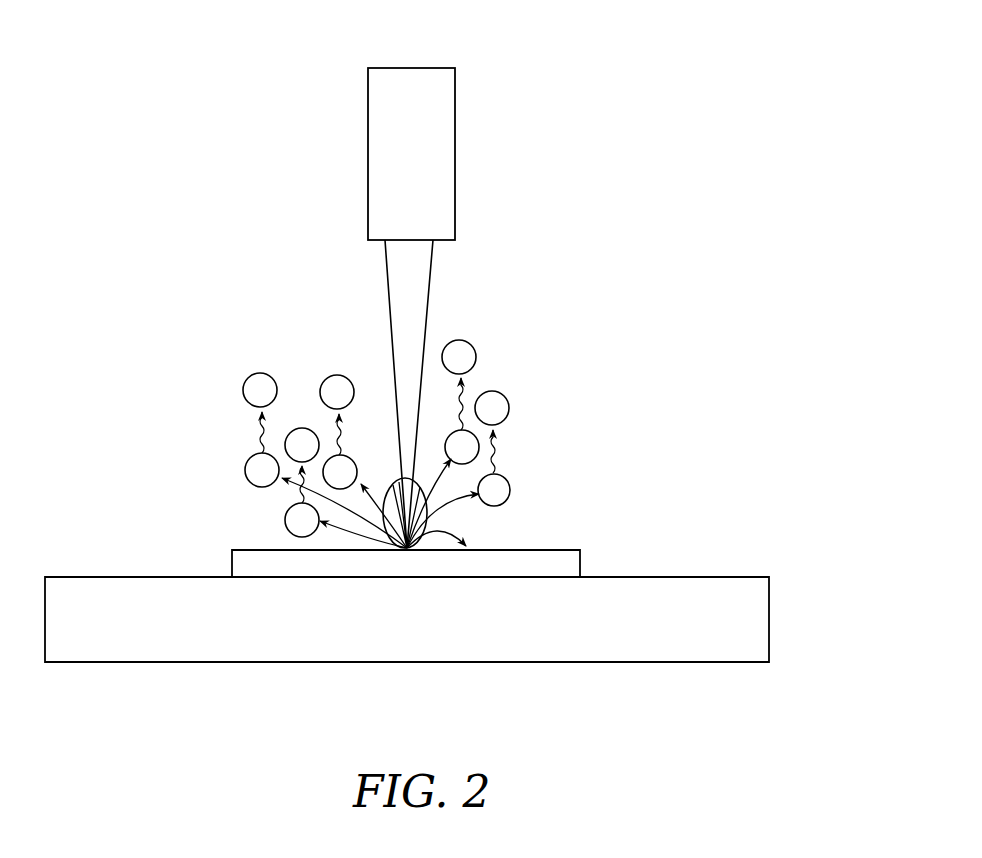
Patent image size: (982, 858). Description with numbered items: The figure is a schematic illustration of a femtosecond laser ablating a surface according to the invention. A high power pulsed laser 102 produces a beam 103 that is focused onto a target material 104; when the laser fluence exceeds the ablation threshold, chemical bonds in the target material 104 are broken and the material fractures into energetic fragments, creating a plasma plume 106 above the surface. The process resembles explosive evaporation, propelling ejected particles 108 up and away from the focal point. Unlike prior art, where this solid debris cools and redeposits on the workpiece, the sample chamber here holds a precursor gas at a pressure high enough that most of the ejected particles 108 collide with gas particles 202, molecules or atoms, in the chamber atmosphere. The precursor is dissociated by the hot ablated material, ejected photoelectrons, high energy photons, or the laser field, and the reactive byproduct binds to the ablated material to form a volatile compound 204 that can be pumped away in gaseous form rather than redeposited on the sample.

The pulsed laser 102 is at (438, 82).
The beam 103 is at (418, 335).
The target material 104 is at (563, 562).
The plasma plume 106 is at (396, 488).
The ejected particles 108 is at (377, 508).
The gas particles 202 is at (248, 458).
The volatile compound 204 is at (528, 380).